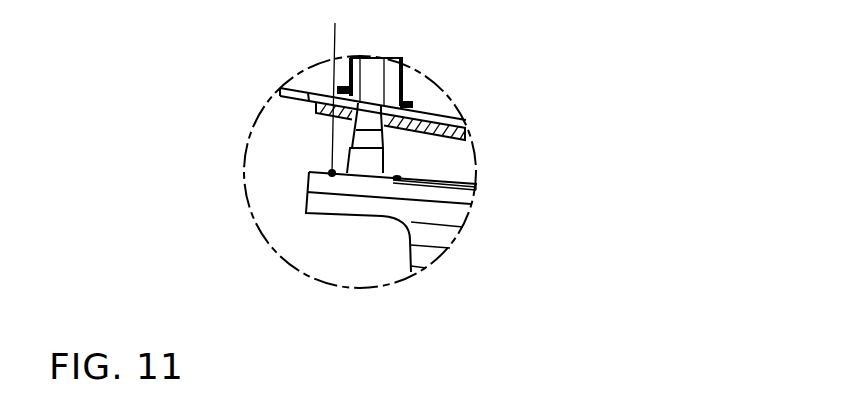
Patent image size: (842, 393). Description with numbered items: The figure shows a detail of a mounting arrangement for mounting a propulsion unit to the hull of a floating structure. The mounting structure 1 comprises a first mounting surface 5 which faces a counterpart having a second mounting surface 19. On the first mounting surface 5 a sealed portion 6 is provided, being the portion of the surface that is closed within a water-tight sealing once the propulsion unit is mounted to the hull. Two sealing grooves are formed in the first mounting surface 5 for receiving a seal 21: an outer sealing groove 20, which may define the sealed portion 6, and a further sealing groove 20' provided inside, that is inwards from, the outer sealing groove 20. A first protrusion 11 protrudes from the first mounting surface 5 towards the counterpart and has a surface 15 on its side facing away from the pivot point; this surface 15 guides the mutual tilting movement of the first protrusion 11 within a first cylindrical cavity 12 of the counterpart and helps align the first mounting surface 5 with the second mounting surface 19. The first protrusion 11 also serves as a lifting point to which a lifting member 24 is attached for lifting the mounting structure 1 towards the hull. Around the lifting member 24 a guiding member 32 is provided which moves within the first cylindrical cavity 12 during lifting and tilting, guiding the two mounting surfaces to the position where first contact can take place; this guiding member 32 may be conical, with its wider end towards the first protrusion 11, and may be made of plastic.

The mounting structure 1 is at (332, 180).
The first mounting surface 5 is at (461, 163).
The sealed portion 6 is at (360, 190).
The first protrusion 11 is at (368, 160).
The first cylindrical cavity 12 is at (368, 75).
The surface 15 is at (330, 167).
The second mounting surface 19 is at (320, 128).
The outer sealing groove 20 is at (290, 268).
The further sealing groove 20' is at (525, 262).
The seal 21 is at (595, 253).
The lifting member 24 is at (392, 85).
The guiding member 32 is at (368, 144).